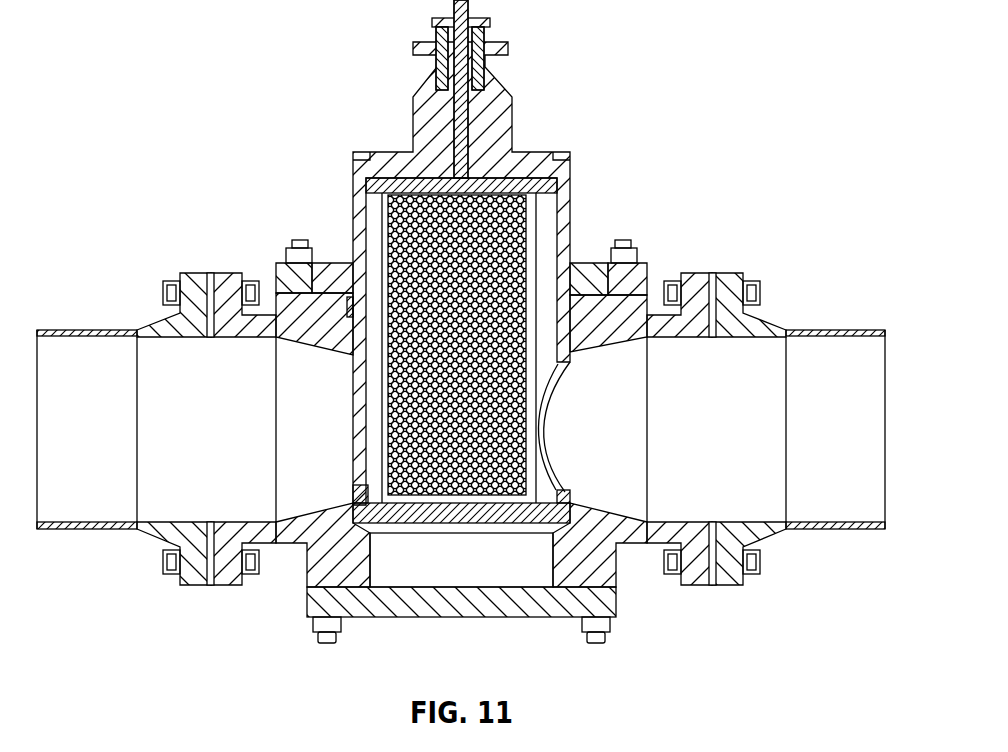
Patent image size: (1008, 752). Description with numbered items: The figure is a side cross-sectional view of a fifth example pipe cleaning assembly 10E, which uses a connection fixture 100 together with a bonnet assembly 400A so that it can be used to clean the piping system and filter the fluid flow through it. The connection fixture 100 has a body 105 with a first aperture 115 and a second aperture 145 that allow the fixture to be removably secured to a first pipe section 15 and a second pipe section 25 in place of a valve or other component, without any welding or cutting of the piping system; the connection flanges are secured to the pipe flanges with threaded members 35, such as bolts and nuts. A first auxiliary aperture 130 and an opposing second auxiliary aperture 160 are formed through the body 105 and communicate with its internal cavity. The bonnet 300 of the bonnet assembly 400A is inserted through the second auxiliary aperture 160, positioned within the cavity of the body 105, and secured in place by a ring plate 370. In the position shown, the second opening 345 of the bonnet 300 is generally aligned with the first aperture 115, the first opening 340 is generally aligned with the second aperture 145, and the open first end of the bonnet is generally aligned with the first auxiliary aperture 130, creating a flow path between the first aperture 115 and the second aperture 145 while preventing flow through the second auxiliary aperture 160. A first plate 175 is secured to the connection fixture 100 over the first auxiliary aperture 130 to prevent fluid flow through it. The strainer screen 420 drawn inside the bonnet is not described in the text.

The pipe cleaning assembly 10E is at (178, 42).
The bonnet assembly 400A is at (364, 104).
The bonnet 300 is at (342, 176).
The second auxiliary aperture 160 is at (352, 300).
The strainer basket 420 is at (550, 210).
The ring plate 370 is at (593, 280).
The first pipe section 15 is at (82, 330).
The second pipe section 25 is at (842, 330).
The first aperture 115 is at (248, 337).
The second aperture 145 is at (676, 337).
The second opening 345 is at (356, 495).
The first opening 340 is at (568, 494).
The first auxiliary aperture 130 is at (553, 556).
The connection fixture 100 is at (294, 573).
The body 105 is at (628, 560).
The threaded members 35 is at (327, 642).
The first plate 175 is at (448, 612).